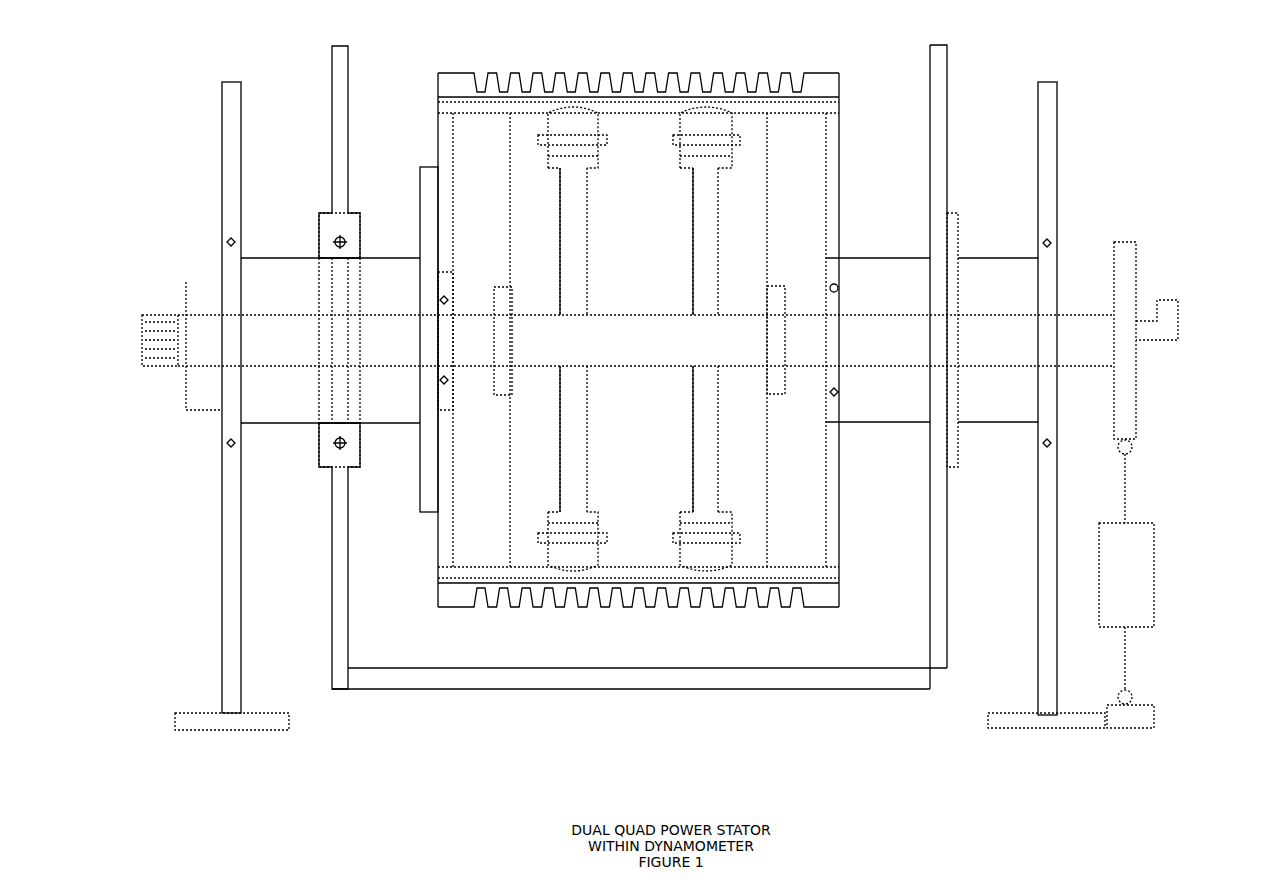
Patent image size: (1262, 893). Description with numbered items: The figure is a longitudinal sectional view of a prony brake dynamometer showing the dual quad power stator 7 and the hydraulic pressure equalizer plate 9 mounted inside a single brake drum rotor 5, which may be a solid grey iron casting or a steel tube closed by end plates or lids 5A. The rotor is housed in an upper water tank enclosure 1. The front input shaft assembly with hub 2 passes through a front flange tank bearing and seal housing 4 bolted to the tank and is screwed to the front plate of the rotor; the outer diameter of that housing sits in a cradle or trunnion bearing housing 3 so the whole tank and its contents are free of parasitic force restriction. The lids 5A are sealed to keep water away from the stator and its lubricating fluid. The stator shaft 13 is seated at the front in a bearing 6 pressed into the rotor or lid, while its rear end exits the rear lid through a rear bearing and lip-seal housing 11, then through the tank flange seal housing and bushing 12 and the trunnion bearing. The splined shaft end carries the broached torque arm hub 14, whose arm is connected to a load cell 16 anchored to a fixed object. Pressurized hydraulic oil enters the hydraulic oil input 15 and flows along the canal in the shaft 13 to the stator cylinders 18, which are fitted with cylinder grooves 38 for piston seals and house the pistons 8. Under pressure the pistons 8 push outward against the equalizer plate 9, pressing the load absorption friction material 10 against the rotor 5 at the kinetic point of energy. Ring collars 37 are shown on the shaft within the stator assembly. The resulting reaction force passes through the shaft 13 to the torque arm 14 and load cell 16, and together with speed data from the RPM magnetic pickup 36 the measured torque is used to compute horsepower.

The water tank enclosure 1 is at (624, 356).
The input shaft assembly with hub 2 is at (263, 339).
The cradle bearing housing 3 is at (633, 406).
The tank bearing and seal housings 4 is at (311, 354).
The dynamometer brake drum rotor 5 is at (638, 331).
The lids 5A is at (644, 340).
The front bearing in brake drum rotor lid for stator shaft 6 is at (470, 332).
The dual quad power stator 7 is at (637, 353).
The hydraulic activated pistons with centering guide pins 8 is at (640, 339).
The hydraulic pressure equalizer plate 9 is at (607, 338).
The load absorption friction material 10 is at (638, 337).
The rotor rear bearing/seal housing in brake drum rotor lid 11 is at (878, 328).
The flange tank rear seal housing with bushing 12 is at (992, 309).
The stator shaft with common hydraulic canal and cylinder ports 13 is at (646, 340).
The torque arm and broached hub 14 is at (1157, 334).
The hydraulic oil input 15 is at (1189, 315).
The load cell for measuring torque 16 is at (1160, 591).
The stator cylinders 18 is at (639, 340).
The RPM magnetic pickup 36 is at (153, 371).
The ring collars 37 is at (675, 374).
The cylinder grooves for piston seals 38 is at (714, 338).